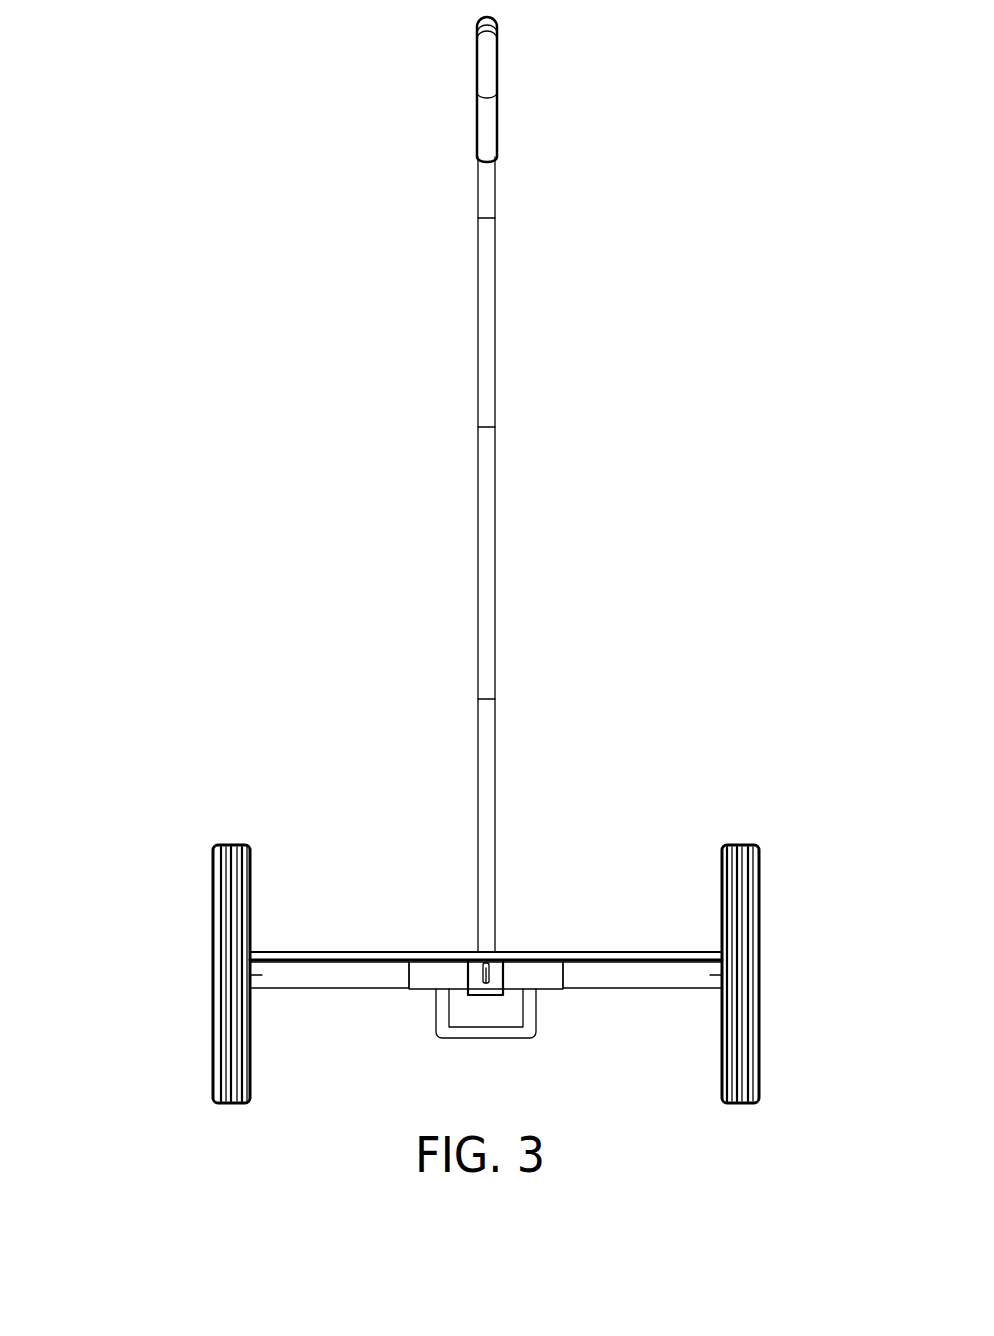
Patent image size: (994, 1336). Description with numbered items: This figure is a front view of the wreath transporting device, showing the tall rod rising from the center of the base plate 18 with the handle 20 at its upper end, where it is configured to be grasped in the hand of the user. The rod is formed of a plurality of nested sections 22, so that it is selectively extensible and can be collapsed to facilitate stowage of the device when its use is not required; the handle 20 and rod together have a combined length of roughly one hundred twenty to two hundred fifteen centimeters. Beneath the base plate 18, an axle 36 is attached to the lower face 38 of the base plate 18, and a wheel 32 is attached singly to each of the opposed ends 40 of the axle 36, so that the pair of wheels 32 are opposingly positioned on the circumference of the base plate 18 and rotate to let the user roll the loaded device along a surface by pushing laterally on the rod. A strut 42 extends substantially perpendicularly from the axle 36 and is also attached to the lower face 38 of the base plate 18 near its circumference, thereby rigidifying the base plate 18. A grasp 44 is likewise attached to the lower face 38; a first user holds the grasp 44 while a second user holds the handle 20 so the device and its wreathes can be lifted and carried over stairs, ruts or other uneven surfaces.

The base plate 18 is at (625, 952).
The handle 20 is at (487, 72).
The nested sections 22 is at (495, 318).
The wheel 32 is at (213, 918).
The axle 36 is at (600, 978).
The lower face 38 is at (340, 962).
The opposed ends 40 is at (251, 973).
The strut 42 is at (473, 975).
The grasp 44 is at (435, 1029).